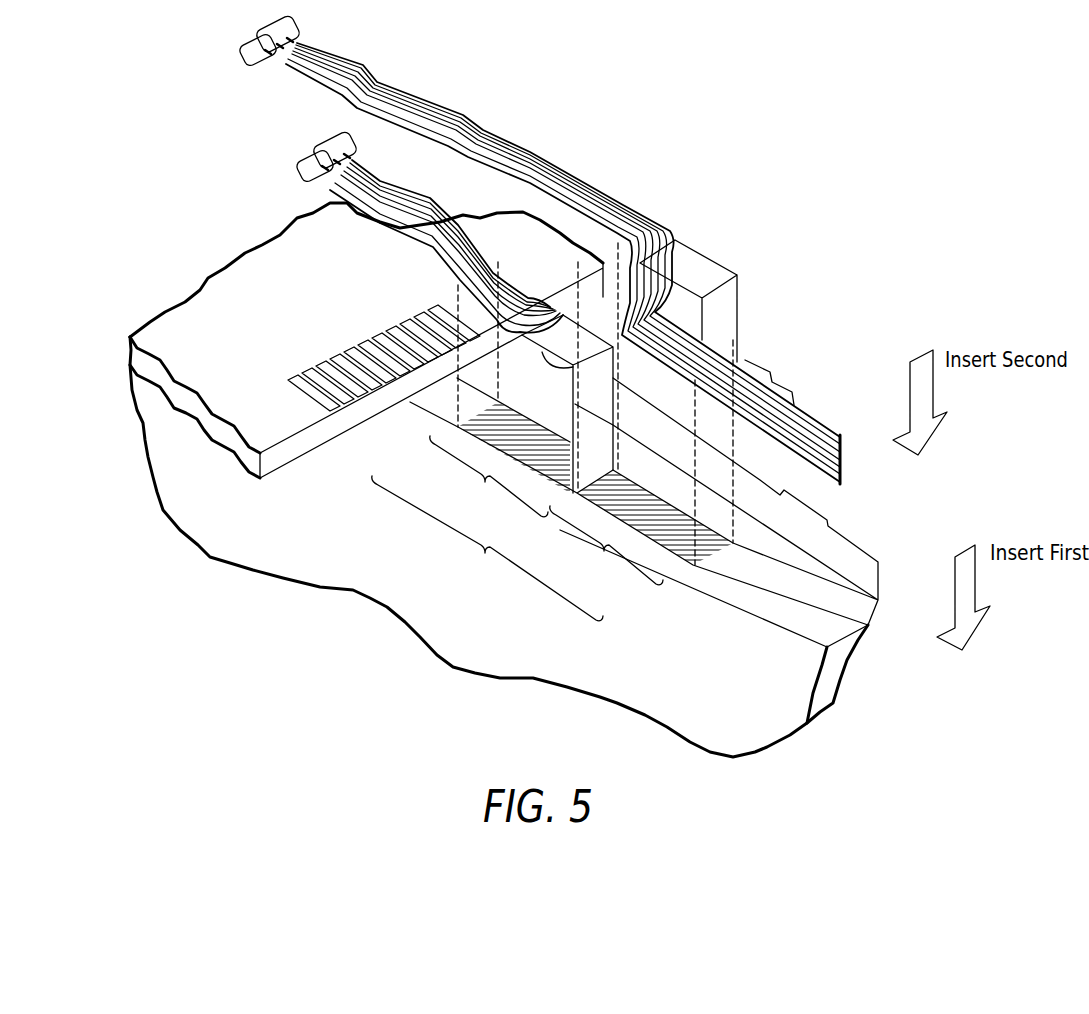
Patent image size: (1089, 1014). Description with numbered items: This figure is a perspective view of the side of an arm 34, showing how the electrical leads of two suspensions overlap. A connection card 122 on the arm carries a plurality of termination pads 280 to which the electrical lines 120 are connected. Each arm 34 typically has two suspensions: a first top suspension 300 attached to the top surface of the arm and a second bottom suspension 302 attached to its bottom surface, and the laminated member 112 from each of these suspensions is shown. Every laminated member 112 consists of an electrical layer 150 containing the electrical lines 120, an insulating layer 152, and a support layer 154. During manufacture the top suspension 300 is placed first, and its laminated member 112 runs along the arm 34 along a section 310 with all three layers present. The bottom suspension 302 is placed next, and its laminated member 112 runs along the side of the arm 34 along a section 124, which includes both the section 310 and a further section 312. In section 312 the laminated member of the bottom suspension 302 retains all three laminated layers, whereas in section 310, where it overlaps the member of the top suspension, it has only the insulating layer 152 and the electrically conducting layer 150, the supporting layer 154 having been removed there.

The arm 34 is at (390, 593).
The laminated member 112 is at (772, 382).
The electrical lines 120 is at (623, 207).
The connection card 122 is at (208, 307).
The section 124 is at (487, 548).
The electrical layer 150 is at (643, 216).
The insulating layer 152 is at (653, 248).
The support layer 154 is at (717, 272).
The termination pads 280 is at (360, 337).
The top suspension 300 is at (878, 600).
The bottom suspension 302 is at (843, 463).
The section 310 is at (525, 461).
The section 312 is at (645, 527).